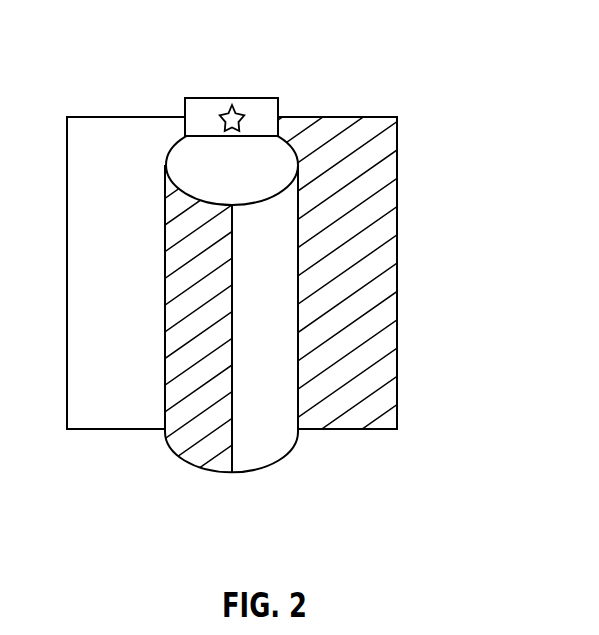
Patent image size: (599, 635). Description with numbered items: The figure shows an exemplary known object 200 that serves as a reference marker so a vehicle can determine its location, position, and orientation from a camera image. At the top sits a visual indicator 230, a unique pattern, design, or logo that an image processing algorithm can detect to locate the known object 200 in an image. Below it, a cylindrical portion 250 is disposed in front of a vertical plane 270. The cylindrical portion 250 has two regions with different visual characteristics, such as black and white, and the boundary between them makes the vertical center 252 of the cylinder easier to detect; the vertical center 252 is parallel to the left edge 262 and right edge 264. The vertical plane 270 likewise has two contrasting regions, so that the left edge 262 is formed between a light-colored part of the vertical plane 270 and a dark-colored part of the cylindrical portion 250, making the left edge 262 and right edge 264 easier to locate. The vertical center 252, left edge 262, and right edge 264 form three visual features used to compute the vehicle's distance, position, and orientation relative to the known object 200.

The known object 200 is at (299, 317).
The visual indicator 230 is at (232, 98).
The cylindrical portion 250 is at (299, 317).
The vertical center 252 is at (230, 478).
The left edge 262 is at (165, 445).
The right edge 264 is at (299, 454).
The vertical plane 270 is at (397, 270).